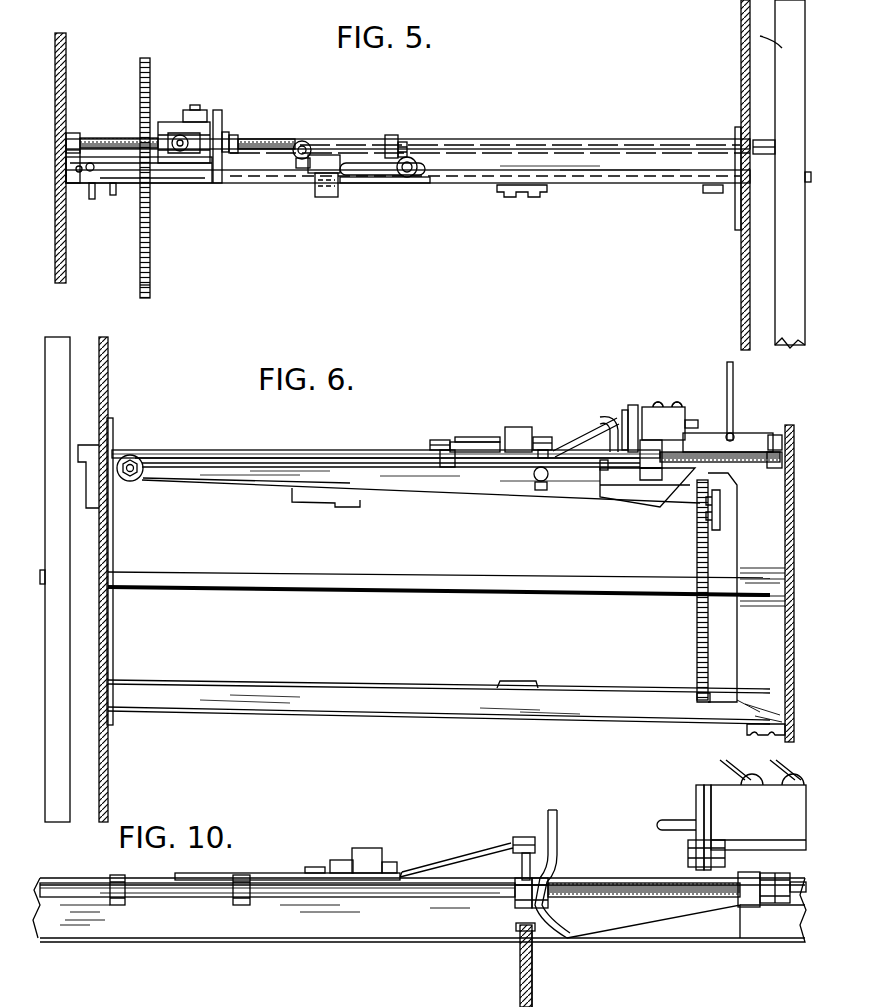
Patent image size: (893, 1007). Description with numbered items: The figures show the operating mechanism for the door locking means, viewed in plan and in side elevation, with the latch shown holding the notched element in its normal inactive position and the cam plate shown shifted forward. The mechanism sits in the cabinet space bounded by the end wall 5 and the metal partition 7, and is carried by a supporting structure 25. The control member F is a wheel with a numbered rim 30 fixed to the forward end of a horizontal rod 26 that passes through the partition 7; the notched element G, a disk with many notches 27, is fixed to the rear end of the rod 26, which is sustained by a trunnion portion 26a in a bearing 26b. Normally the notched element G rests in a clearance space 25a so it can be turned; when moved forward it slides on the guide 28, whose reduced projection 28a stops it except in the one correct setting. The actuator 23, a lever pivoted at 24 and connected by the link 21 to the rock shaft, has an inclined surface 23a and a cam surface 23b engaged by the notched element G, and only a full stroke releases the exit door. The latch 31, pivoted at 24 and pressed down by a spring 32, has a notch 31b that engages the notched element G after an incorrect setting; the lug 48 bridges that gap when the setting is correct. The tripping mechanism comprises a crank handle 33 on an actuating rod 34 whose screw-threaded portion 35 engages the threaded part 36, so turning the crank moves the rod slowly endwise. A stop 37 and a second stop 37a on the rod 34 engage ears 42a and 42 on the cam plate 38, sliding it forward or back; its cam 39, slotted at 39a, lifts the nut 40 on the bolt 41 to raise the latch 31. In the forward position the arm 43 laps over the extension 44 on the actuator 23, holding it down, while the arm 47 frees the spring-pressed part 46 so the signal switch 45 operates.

In FIG. 5, the end wall 5 is at (66, 68).
In FIG. 6, the end wall 5 is at (794, 642).
In FIG. 6, the metal partition 7 is at (109, 755).
In FIG. 5, the link 21 is at (118, 190).
In FIG. 6, the link 21 is at (733, 380).
In FIG. 5, the actuator 23 is at (162, 178).
In FIG. 6, the actuator 23 is at (752, 435).
In FIG. 6, the inclined surface 23a is at (668, 505).
In FIG. 5, the cam surface 23b is at (520, 198).
In FIG. 6, the cam surface 23b is at (355, 507).
In FIG. 5, the pivot 24 is at (712, 194).
In FIG. 6, the pivot 24 is at (130, 460).
In FIG. 5, the supporting structure 25 is at (676, 172).
In FIG. 6, the supporting structure 25 is at (160, 688).
In FIG. 10, the supporting structure 25 is at (722, 935).
In FIG. 6, the clearance space 25a is at (720, 702).
In FIG. 6, the rod or shaft 26 is at (375, 586).
In FIG. 6, the trunnion portion 26a is at (762, 584).
In FIG. 6, the bearing 26b is at (750, 598).
In FIG. 5, the notches 27 is at (150, 63).
In FIG. 6, the notches 27 is at (697, 560).
In FIG. 10, the notches 27 is at (533, 935).
In FIG. 6, the guide 28 is at (455, 697).
In FIG. 6, the reduced projection 28a is at (514, 684).
In FIG. 5, the rim 30 is at (760, 36).
In FIG. 6, the rim 30 is at (58, 550).
In FIG. 6, the latch 31 is at (250, 470).
In FIG. 10, the latch 31 is at (197, 930).
In FIG. 6, the notch 31b is at (540, 491).
In FIG. 10, the notch 31b is at (517, 925).
In FIG. 6, the spring 32 is at (533, 470).
In FIG. 10, the spring 32 is at (520, 875).
In FIG. 5, the crank handle 33 is at (760, 140).
In FIG. 6, the crank handle 33 is at (85, 445).
In FIG. 5, the actuating rod 34 is at (578, 140).
In FIG. 6, the actuating rod 34 is at (215, 450).
In FIG. 10, the actuating rod 34 is at (87, 886).
In FIG. 5, the screw-threaded portion 35 is at (108, 138).
In FIG. 6, the screw-threaded portion 35 is at (710, 450).
In FIG. 10, the screw-threaded portion 35 is at (644, 902).
In FIG. 5, the threaded part 36 is at (178, 135).
In FIG. 6, the threaded part 36 is at (669, 435).
In FIG. 10, the threaded part 36 is at (745, 907).
In FIG. 5, the stop 37 is at (190, 122).
In FIG. 6, the stop 37 is at (647, 466).
In FIG. 10, the stop 37 is at (550, 880).
In FIG. 5, the second stop 37a is at (402, 142).
In FIG. 6, the second stop 37a is at (435, 447).
In FIG. 10, the second stop 37a is at (119, 905).
In FIG. 5, the cam plate 38 is at (328, 156).
In FIG. 6, the cam plate 38 is at (487, 442).
In FIG. 10, the cam plate 38 is at (275, 875).
In FIG. 5, the cam 39 is at (265, 140).
In FIG. 6, the cam 39 is at (578, 440).
In FIG. 10, the cam 39 is at (455, 868).
In FIG. 5, the elongated slot 39a is at (370, 173).
In FIG. 5, the nut 40 is at (305, 168).
In FIG. 6, the nut 40 is at (546, 450).
In FIG. 10, the nut 40 is at (518, 838).
In FIG. 5, the bolt 41 is at (302, 141).
In FIG. 6, the bolt 41 is at (542, 437).
In FIG. 10, the bolt 41 is at (528, 837).
In FIG. 5, the ear 42 is at (390, 135).
In FIG. 6, the ear 42 is at (447, 468).
In FIG. 10, the ear 42 is at (248, 905).
In FIG. 5, the ear 42a is at (240, 140).
In FIG. 6, the ear 42a is at (605, 470).
In FIG. 10, the ear 42a is at (573, 936).
In FIG. 5, the laterally-projecting arm 43 is at (321, 197).
In FIG. 6, the laterally-projecting arm 43 is at (520, 427).
In FIG. 10, the laterally-projecting arm 43 is at (360, 850).
In FIG. 5, the extension 44 is at (353, 184).
In FIG. 6, the extension 44 is at (455, 440).
In FIG. 10, the extension 44 is at (340, 864).
In FIG. 5, the signal switch 45 is at (197, 130).
In FIG. 6, the signal switch 45 is at (672, 405).
In FIG. 10, the signal switch 45 is at (730, 800).
In FIG. 5, the switch part 46 is at (219, 135).
In FIG. 6, the switch part 46 is at (625, 410).
In FIG. 10, the switch part 46 is at (672, 818).
In FIG. 5, the arm 47 is at (228, 136).
In FIG. 6, the arm 47 is at (610, 420).
In FIG. 10, the arm 47 is at (558, 815).
In FIG. 6, the lug 48 is at (720, 492).
In FIG. 5, the control member F is at (790, 285).
In FIG. 6, the control member F is at (62, 345).
In FIG. 5, the notched element G is at (151, 289).
In FIG. 6, the notched element G is at (696, 635).
In FIG. 10, the notched element G is at (520, 992).